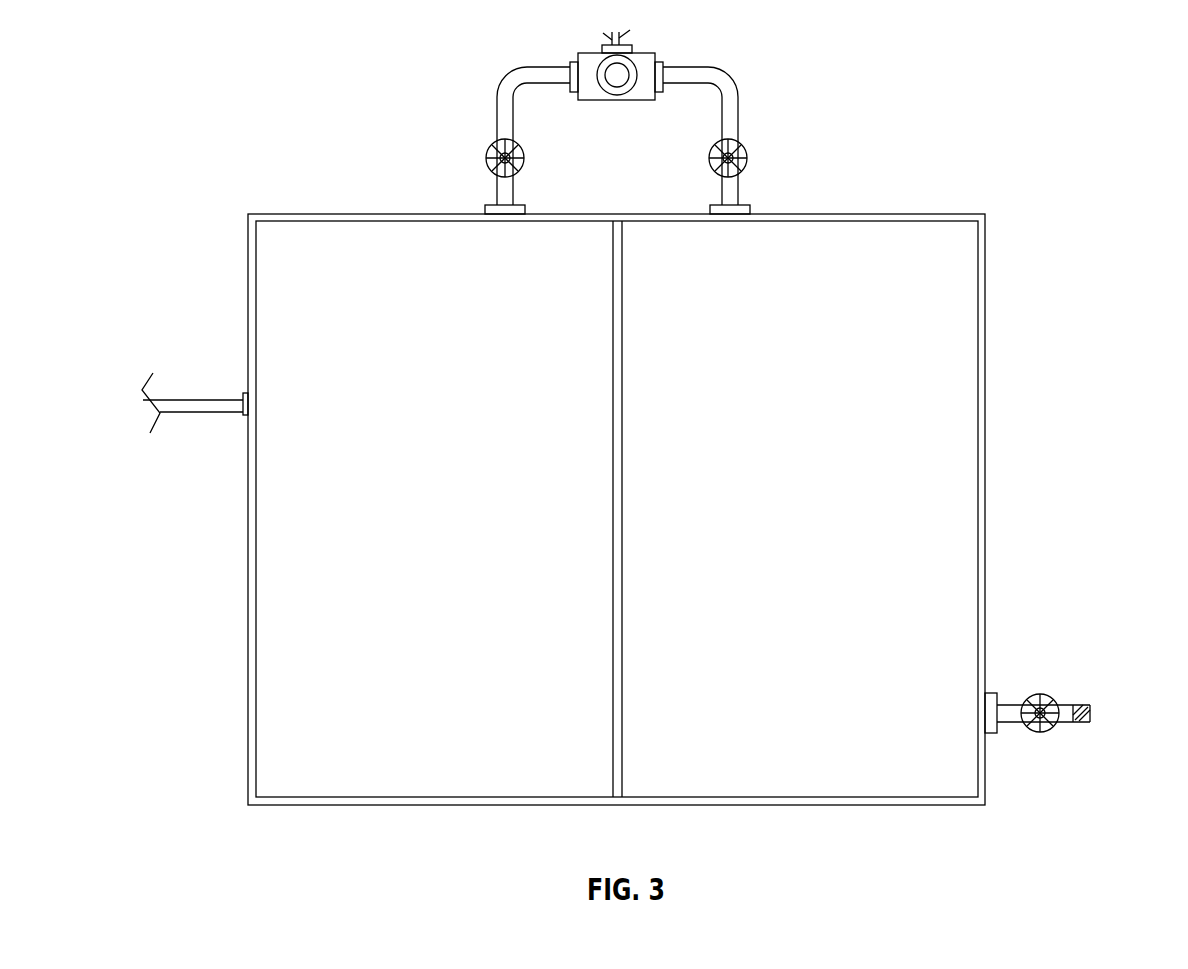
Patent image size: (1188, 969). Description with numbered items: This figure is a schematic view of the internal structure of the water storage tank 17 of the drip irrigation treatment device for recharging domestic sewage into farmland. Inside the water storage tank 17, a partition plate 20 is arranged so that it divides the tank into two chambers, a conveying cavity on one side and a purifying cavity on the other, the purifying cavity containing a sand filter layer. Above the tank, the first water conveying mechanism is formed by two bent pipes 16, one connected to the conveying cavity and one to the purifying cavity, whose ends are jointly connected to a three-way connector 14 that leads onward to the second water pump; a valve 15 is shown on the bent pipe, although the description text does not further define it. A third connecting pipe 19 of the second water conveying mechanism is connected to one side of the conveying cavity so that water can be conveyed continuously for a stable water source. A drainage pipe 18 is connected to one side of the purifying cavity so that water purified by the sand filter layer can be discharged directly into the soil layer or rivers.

The three-way connector 14 is at (647, 65).
The valve 15 is at (493, 142).
The bent pipes 16 is at (505, 103).
The water storage tank 17 is at (985, 680).
The drainage pipe 18 is at (1003, 710).
The third connecting pipe 19 is at (227, 403).
The partition plate 20 is at (615, 778).